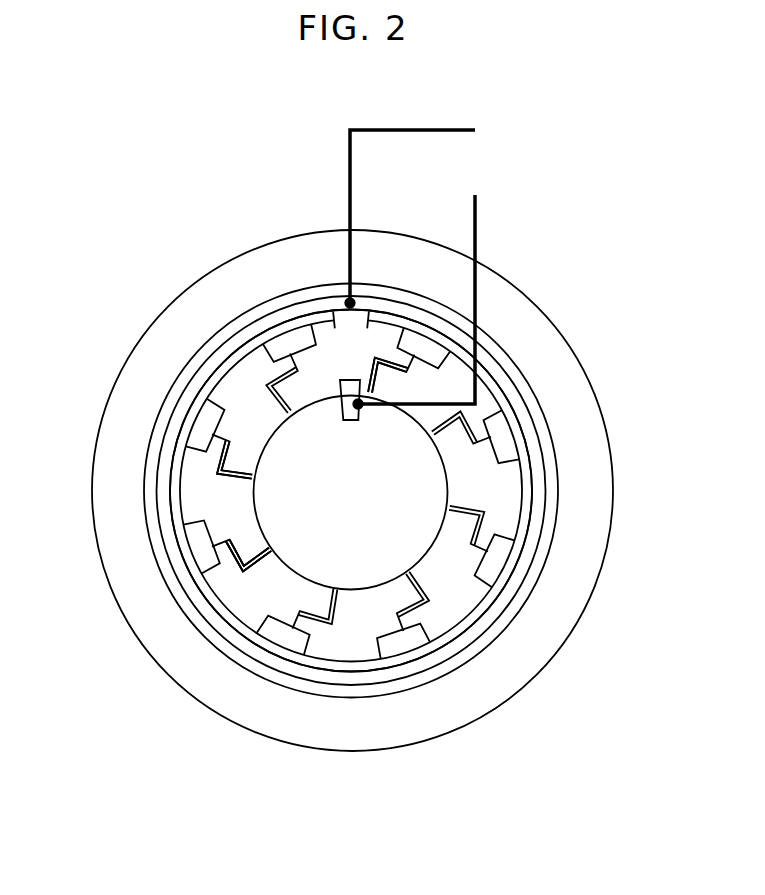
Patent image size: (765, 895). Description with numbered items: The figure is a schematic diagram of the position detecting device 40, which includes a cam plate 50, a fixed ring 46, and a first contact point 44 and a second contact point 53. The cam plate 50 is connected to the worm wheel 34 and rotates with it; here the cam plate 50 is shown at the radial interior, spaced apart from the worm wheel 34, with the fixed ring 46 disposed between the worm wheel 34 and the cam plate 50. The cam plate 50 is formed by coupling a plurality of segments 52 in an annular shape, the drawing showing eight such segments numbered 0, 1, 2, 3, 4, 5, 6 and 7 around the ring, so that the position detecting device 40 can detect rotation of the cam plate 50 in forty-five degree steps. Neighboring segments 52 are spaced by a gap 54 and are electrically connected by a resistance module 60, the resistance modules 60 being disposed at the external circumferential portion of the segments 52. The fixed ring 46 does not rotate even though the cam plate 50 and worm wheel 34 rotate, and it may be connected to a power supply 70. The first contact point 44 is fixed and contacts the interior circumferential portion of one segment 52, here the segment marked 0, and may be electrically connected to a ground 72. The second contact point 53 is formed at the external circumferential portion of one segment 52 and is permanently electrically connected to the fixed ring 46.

The position detecting device 40 is at (161, 288).
The worm wheel 34 is at (230, 275).
The fixed ring 46 is at (515, 405).
The cam plate 50 is at (357, 666).
The resistance module 60 is at (188, 551).
The segment 52 is at (376, 350).
The gap 54 is at (237, 565).
The first contact point 44 is at (340, 405).
The second contact point 53 is at (356, 292).
The power supply 70 is at (437, 128).
The ground 72 is at (478, 208).
The stator pole 0 is at (301, 363).
The stator pole 1 is at (222, 438).
The stator pole 2 is at (221, 542).
The stator pole 3 is at (295, 615).
The stator pole 4 is at (399, 621).
The stator pole 5 is at (477, 548).
The stator pole 6 is at (481, 442).
The stator pole 7 is at (410, 365).